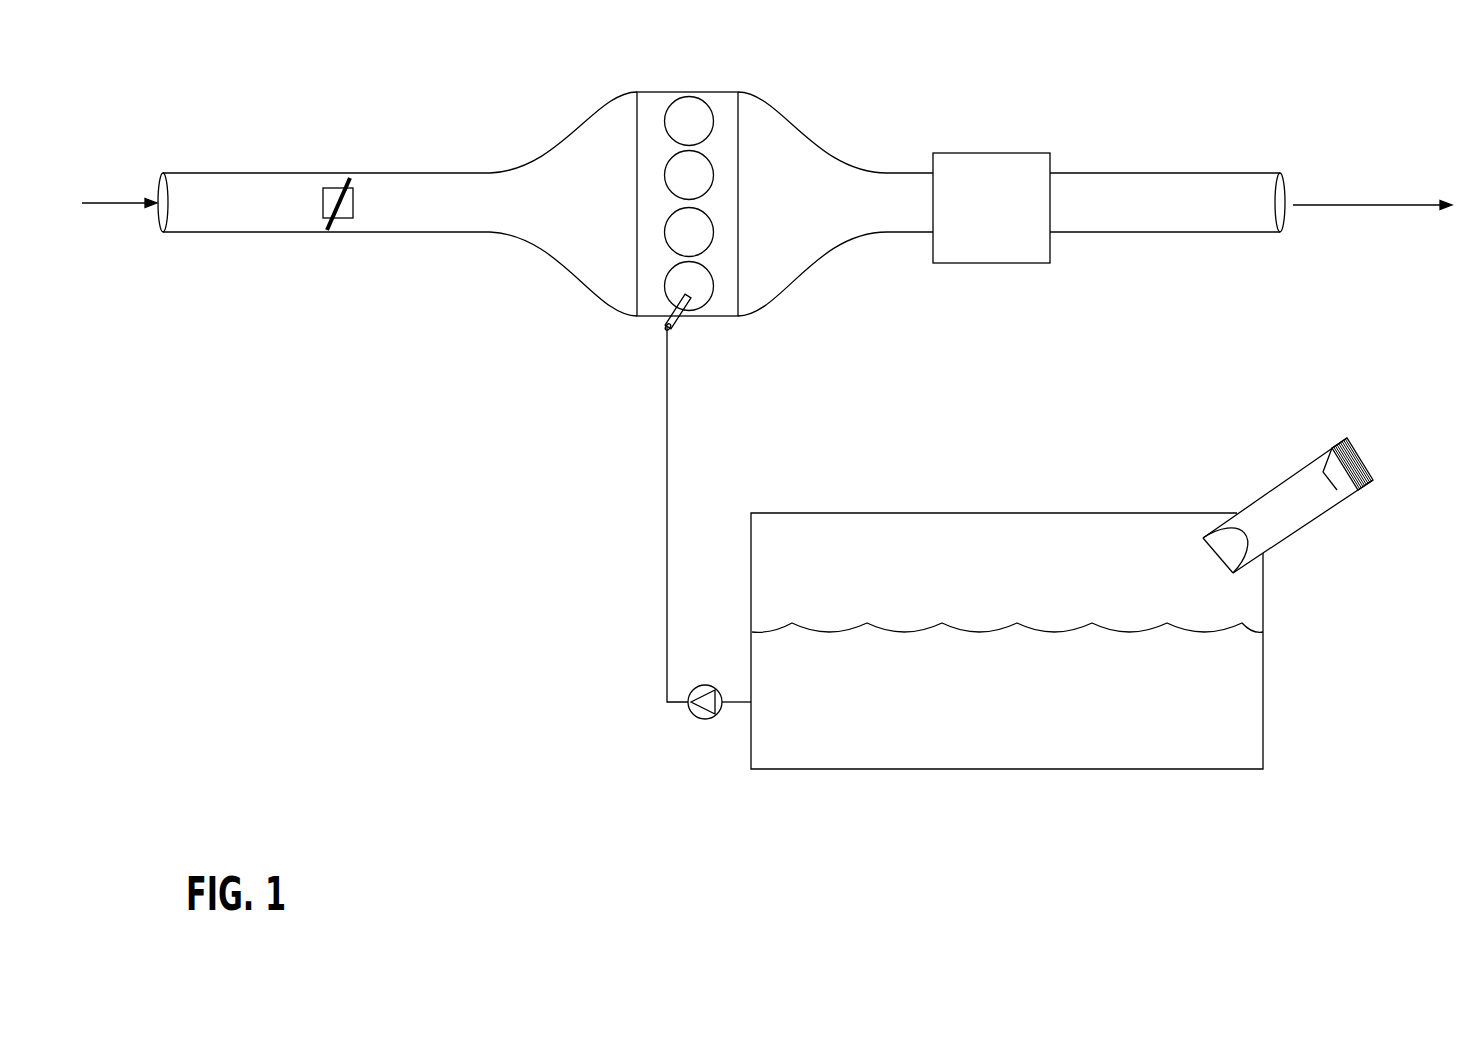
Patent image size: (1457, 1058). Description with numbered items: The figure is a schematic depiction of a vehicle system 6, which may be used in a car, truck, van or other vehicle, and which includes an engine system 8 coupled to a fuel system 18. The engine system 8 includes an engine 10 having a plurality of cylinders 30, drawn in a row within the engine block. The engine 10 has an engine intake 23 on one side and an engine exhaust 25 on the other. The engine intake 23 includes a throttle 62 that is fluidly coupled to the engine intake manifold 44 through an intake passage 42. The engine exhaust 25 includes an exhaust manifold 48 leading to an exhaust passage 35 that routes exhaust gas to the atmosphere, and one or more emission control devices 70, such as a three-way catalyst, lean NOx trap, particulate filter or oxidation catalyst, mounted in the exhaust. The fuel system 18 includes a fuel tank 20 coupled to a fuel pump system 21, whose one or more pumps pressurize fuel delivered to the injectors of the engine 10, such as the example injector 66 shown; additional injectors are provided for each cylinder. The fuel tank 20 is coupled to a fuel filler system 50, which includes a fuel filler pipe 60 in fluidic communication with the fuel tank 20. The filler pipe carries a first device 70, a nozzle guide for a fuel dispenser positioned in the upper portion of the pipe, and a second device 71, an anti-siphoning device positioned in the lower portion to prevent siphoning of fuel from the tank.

The vehicle system 6 is at (176, 91).
The engine system 8 is at (1066, 84).
The engine 10 is at (738, 183).
The fuel system 18 is at (661, 782).
The fuel tank 20 is at (1264, 620).
The fuel pump system 21 is at (704, 684).
The engine intake 23 is at (556, 115).
The engine exhaust 25 is at (925, 96).
The cylinders 30 is at (713, 116).
The exhaust passage 35 is at (1228, 173).
The intake passage 42 is at (371, 233).
The engine intake manifold 44 is at (569, 217).
The exhaust manifold 48 is at (806, 217).
The fuel filler system 50 is at (1277, 421).
The fuel filler pipe 60 is at (1265, 495).
The throttle 62 is at (353, 210).
The injector 66 is at (681, 323).
The emission control device 70 is at (978, 153).
The second device 71 is at (1265, 553).